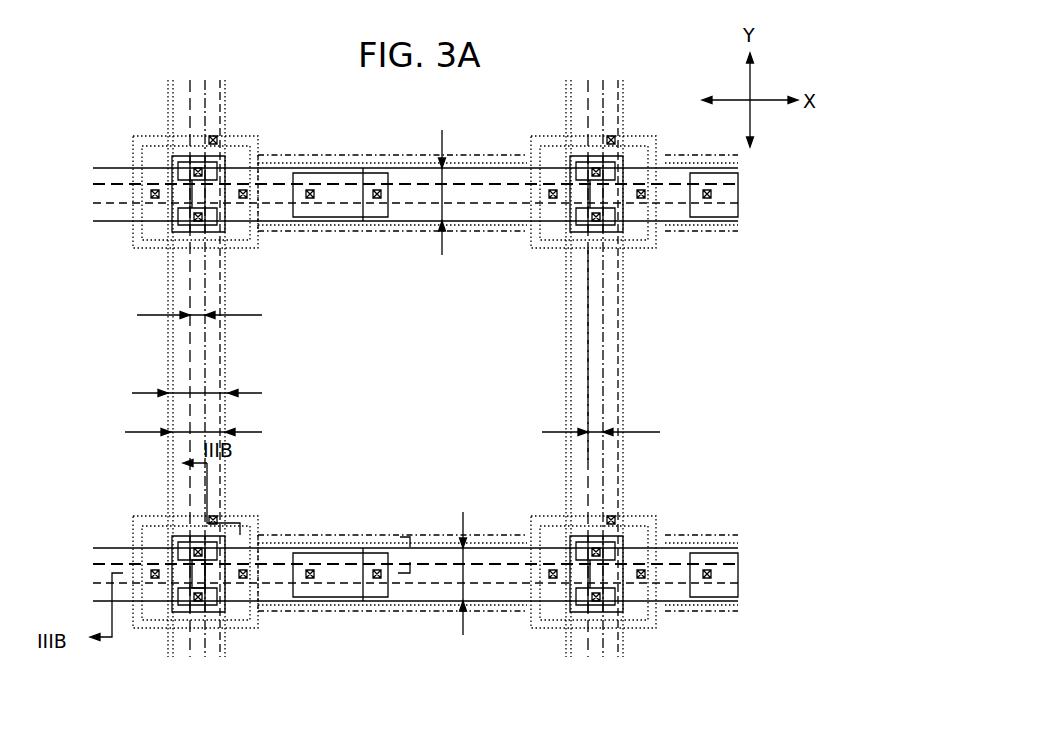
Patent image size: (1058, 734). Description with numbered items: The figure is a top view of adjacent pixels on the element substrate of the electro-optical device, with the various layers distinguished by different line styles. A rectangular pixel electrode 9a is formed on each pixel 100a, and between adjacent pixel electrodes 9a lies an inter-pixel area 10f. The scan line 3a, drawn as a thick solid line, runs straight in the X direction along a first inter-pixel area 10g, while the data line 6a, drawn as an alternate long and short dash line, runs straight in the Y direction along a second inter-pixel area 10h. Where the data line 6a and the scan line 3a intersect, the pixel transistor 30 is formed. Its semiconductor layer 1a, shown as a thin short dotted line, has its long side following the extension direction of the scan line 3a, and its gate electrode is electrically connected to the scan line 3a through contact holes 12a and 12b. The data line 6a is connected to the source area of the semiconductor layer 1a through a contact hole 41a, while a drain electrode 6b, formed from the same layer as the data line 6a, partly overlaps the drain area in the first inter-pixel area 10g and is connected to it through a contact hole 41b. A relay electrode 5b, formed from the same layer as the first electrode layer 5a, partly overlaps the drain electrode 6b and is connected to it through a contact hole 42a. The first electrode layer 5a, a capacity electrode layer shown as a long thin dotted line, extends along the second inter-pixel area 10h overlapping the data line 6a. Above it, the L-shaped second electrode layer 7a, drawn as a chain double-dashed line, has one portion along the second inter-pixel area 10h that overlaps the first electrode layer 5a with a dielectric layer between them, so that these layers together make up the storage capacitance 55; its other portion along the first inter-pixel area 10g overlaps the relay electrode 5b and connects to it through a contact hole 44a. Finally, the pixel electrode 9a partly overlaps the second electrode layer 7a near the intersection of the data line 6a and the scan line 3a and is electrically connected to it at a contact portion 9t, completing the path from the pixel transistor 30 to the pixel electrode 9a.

The data line 6a is at (618, 80).
The scan line 3a is at (743, 602).
The inter-pixel area 10f is at (443, 196).
The first inter-pixel area 10g is at (465, 578).
The second inter-pixel area 10h is at (596, 432).
The pixel 100a is at (477, 343).
The pixel electrode 9a is at (586, 351).
The second electrode layer 7a is at (200, 392).
The first electrode layer 5a is at (200, 431).
The storage capacitance 55 is at (293, 358).
The contact portion 9t is at (616, 515).
The contact hole 12a is at (203, 572).
The contact hole 12b is at (205, 582).
The pixel transistor 30 is at (201, 628).
The semiconductor layer 1a is at (225, 612).
The contact hole 41a is at (155, 567).
The contact hole 41b is at (244, 582).
The contact hole 42a is at (312, 562).
The contact hole 44a is at (386, 588).
The relay electrode 5b is at (318, 610).
The drain electrode 6b is at (344, 606).